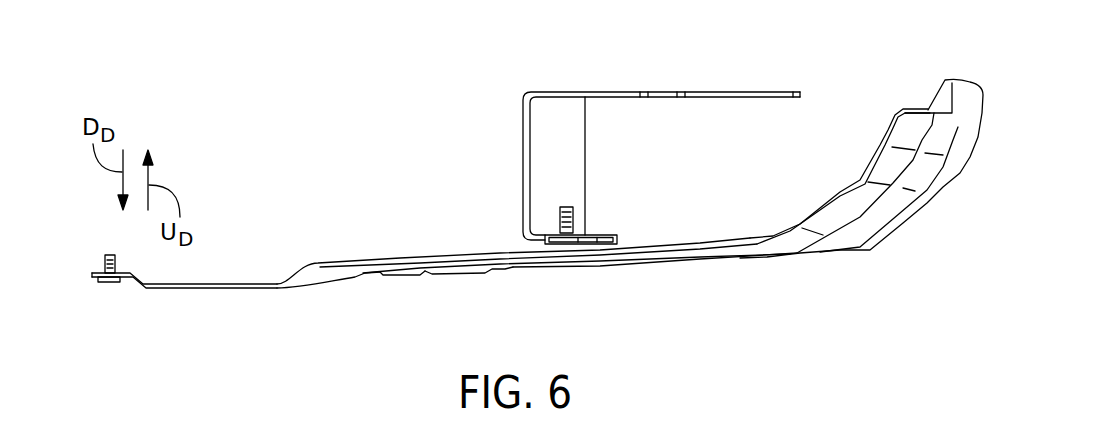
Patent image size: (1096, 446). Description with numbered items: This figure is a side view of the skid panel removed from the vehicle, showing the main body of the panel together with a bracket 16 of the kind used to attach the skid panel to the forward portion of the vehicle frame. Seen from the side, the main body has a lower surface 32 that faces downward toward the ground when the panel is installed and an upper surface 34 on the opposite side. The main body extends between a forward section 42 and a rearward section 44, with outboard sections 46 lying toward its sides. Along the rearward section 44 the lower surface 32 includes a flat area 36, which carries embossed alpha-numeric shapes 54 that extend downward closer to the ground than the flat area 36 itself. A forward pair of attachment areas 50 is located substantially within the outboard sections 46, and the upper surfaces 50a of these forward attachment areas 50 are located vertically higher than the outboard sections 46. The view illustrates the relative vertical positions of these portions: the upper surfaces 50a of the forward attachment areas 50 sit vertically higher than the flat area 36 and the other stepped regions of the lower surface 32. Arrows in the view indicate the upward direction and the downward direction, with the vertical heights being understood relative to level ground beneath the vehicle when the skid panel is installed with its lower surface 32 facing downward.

The bracket 16 is at (721, 91).
The lower surface 32 is at (197, 289).
The upper surface 34 is at (238, 282).
The flat area 36 is at (412, 262).
The forward section 42 is at (923, 173).
The rearward section 44 is at (640, 268).
The outboard section 46 is at (723, 246).
The forward attachment area 50 is at (540, 249).
The upper surface of forward attachment area 50a is at (602, 236).
The embossed alpha-numeric shape 54 is at (456, 277).